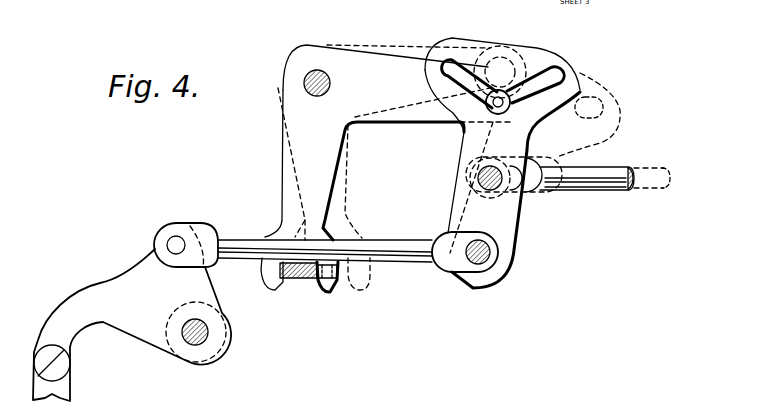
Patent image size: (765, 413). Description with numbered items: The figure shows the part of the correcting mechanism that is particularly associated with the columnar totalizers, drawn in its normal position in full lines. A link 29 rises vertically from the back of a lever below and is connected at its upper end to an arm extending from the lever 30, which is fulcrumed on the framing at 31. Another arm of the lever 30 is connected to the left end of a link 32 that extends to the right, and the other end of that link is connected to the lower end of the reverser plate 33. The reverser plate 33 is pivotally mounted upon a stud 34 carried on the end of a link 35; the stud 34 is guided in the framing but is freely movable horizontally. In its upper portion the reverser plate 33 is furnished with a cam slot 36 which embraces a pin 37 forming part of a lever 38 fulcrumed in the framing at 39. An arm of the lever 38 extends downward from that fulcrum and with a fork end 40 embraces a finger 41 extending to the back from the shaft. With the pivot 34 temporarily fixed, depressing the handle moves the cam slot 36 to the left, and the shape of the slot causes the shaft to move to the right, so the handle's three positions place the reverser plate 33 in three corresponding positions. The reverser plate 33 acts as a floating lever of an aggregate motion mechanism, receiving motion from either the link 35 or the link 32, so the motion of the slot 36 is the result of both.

The link 29 is at (57, 388).
The lever 30 is at (107, 290).
The fulcrum 31 is at (195, 347).
The link 32 is at (238, 243).
The reverser plate 33 is at (473, 142).
The stud 34 is at (477, 178).
The link 35 is at (613, 175).
The cam slot 36 is at (545, 85).
The pin 37 is at (510, 93).
The lever 38 is at (375, 70).
The fulcrum 39 is at (312, 62).
The fork end 40 is at (268, 273).
The finger 41 is at (300, 280).